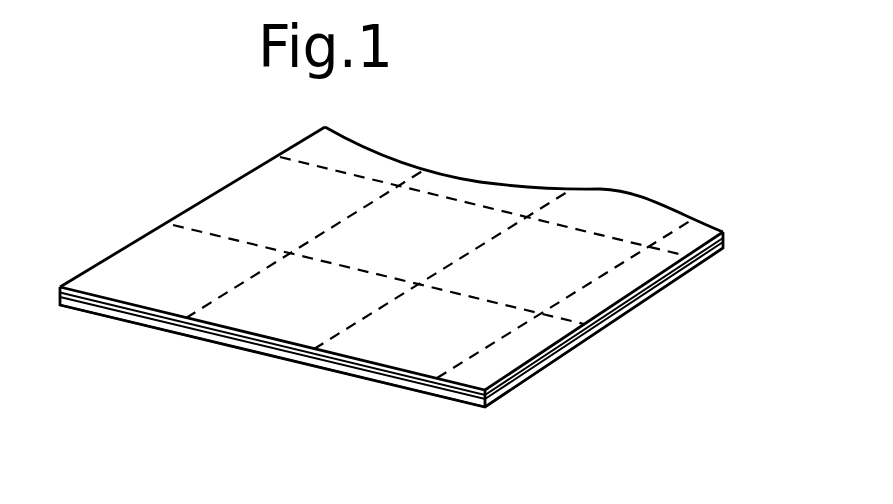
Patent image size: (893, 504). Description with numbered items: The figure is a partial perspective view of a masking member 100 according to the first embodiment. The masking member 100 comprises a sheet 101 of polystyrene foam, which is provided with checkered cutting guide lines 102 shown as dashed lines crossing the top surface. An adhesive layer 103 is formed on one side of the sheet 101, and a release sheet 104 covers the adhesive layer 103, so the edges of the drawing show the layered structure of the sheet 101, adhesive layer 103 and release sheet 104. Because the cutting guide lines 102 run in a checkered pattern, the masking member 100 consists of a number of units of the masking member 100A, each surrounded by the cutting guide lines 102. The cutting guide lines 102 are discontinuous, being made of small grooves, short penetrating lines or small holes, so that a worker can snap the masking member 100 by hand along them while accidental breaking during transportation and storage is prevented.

The masking member 100 is at (197, 206).
The unit of the masking member 100A is at (340, 185).
The sheet 101 is at (432, 397).
The cutting guide lines 102 is at (517, 332).
The adhesive layer 103 is at (618, 322).
The release sheet 104 is at (140, 262).